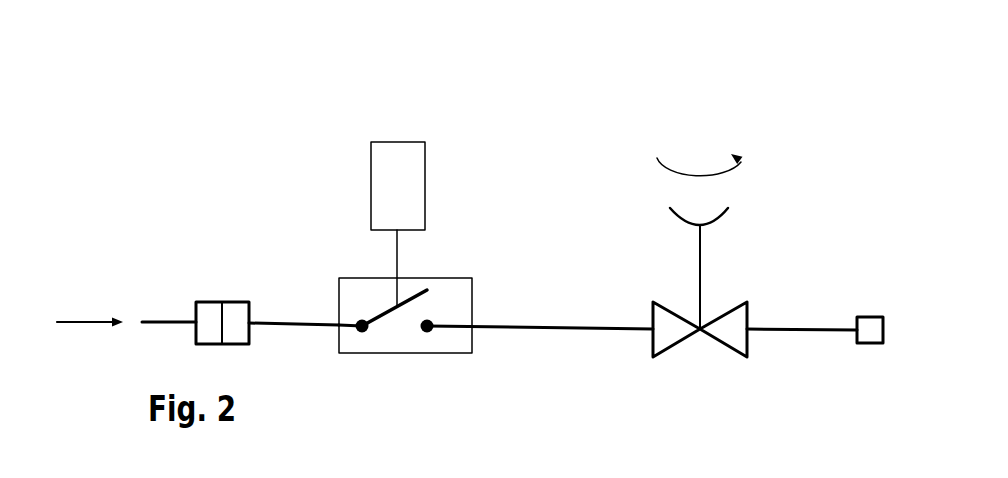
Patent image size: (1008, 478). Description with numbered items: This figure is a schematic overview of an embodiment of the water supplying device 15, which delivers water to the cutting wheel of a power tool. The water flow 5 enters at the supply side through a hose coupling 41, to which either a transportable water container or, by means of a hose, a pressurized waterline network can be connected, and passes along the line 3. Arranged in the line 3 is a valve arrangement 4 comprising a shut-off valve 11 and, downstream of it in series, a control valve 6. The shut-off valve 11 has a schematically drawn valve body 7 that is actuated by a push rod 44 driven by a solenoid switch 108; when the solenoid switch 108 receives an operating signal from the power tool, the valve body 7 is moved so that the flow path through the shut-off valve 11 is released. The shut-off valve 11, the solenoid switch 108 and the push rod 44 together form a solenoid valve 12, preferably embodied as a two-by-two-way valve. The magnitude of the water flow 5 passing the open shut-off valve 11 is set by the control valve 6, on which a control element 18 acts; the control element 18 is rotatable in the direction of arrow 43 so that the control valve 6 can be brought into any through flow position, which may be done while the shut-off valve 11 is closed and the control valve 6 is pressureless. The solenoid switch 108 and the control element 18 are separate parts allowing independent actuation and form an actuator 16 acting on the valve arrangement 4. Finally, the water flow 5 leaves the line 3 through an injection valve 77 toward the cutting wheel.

The line 3 is at (306, 325).
The valve arrangement 4 is at (452, 298).
The water flow 5 is at (85, 320).
The control valve 6 is at (725, 348).
The valve body 7 is at (412, 290).
The shut-off valve 11 is at (402, 355).
The solenoid valve 12 is at (441, 360).
The water supplying device 15 is at (315, 198).
The actuator 16 is at (598, 198).
The control element 18 is at (710, 226).
The hose coupling 41 is at (222, 302).
The arrow 43 is at (697, 188).
The push rod 44 is at (397, 260).
The injection valve 77 is at (870, 317).
The solenoid switch 108 is at (395, 142).